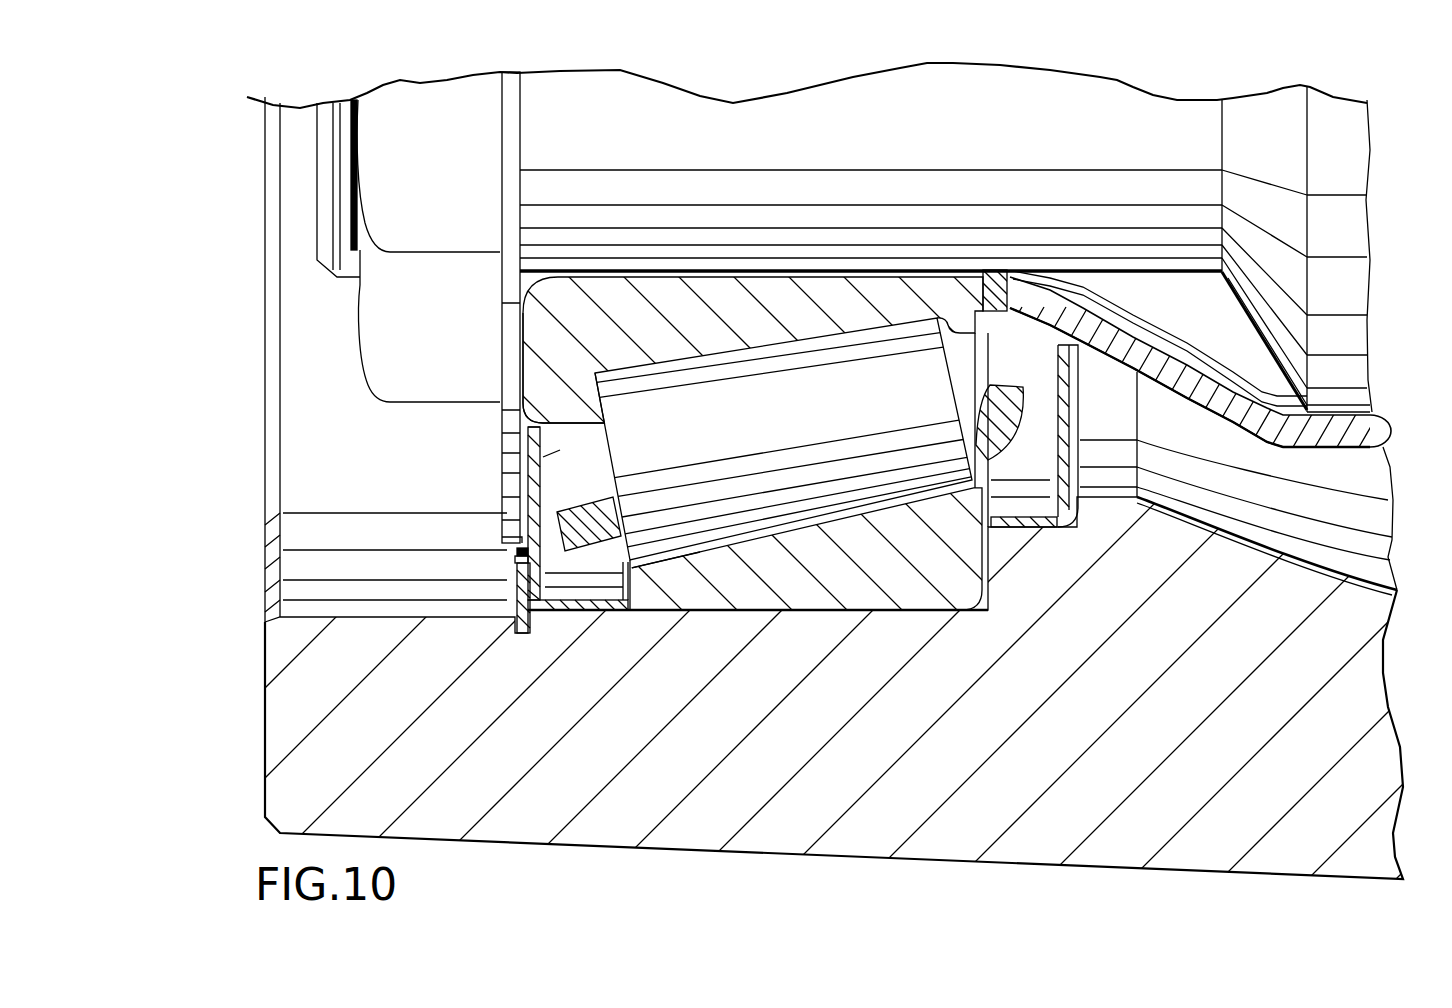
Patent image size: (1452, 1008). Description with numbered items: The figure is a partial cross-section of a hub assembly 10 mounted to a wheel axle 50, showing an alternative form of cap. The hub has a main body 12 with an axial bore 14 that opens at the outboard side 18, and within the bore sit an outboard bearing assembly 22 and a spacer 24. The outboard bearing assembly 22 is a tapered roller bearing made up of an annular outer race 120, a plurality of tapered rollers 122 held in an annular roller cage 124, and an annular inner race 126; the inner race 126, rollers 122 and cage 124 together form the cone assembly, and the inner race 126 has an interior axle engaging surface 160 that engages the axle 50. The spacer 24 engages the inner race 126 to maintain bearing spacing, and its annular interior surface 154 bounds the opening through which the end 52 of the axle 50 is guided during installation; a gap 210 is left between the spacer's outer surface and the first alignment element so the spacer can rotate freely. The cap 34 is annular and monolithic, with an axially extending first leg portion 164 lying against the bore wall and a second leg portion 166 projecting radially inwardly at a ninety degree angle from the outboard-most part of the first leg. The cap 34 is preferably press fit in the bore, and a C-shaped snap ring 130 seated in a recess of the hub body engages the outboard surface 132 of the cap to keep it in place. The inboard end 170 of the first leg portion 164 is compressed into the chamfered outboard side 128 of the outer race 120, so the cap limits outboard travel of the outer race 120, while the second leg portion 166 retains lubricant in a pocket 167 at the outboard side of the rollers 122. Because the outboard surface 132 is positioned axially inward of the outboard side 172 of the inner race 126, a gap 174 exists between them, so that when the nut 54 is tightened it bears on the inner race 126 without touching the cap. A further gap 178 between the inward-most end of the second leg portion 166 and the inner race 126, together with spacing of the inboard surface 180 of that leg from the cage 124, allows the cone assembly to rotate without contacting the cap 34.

The hub assembly 10 is at (243, 763).
The main body 12 is at (527, 813).
The axial bore 14 is at (1330, 567).
The outboard side 18 is at (242, 471).
The outboard bearing assembly 22 is at (830, 612).
The spacer 24 is at (1185, 417).
The cap 34 is at (521, 555).
The wheel axle 50 is at (653, 90).
The end of axle 52 is at (322, 180).
The nut 54 is at (382, 370).
The outer race 120 is at (793, 585).
The tapered rollers 122 is at (865, 478).
The roller cage 124 is at (587, 510).
The inner race 126 is at (700, 290).
The outboard side of outer race 128 is at (633, 613).
The snap ring 130 is at (522, 633).
The outboard surface 132 is at (510, 603).
The interior surface 154 is at (1143, 340).
The interior axle engaging surface 160 is at (817, 270).
The first leg portion 164 is at (596, 612).
The second leg portion 166 is at (537, 453).
The pocket 167 is at (560, 487).
The inboard end 170 is at (640, 600).
The outboard side of inner race 172 is at (520, 323).
The gap 174 is at (530, 430).
The gap 178 is at (540, 423).
The inboard surface 180 is at (543, 457).
The gap 210 is at (1012, 300).